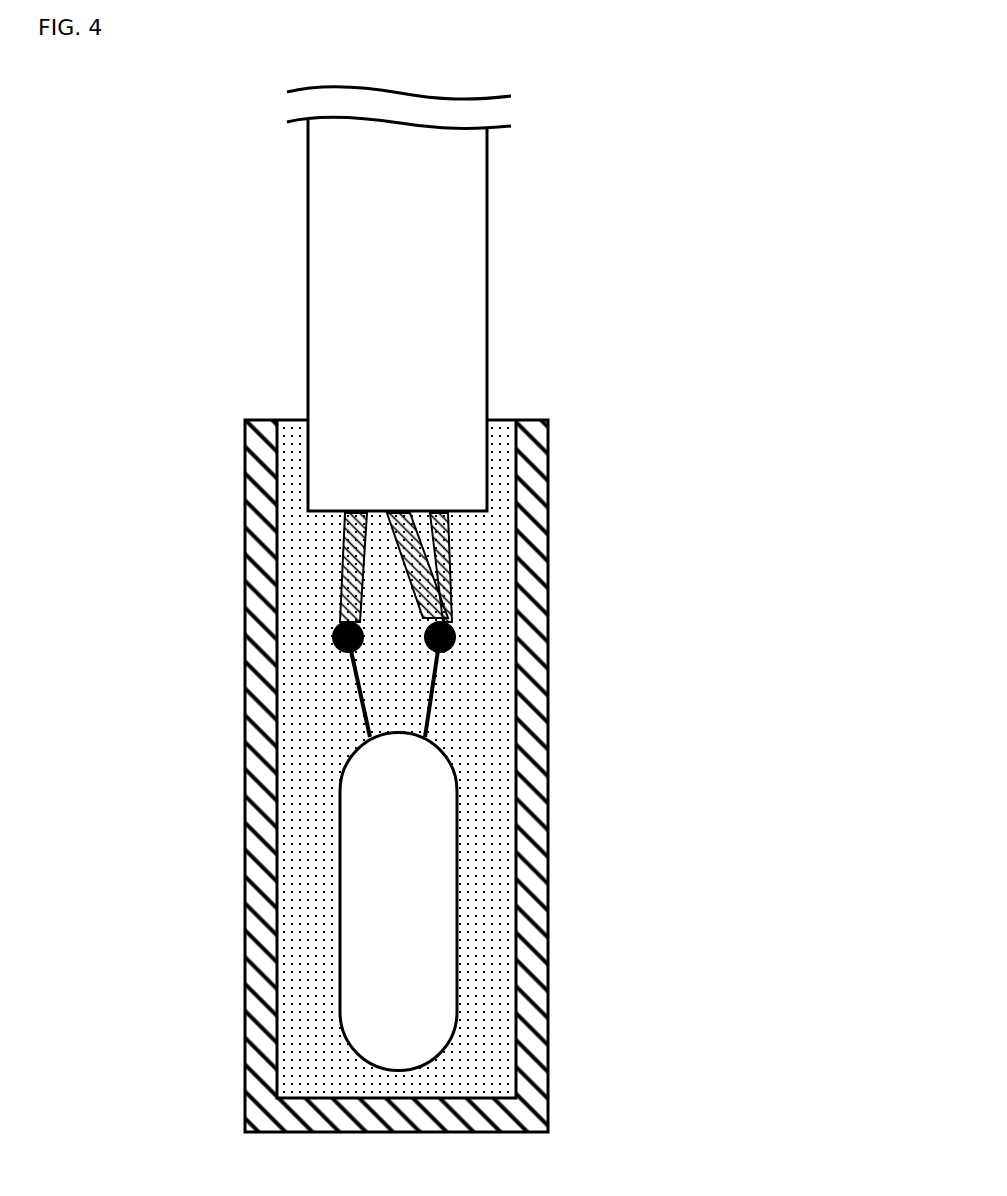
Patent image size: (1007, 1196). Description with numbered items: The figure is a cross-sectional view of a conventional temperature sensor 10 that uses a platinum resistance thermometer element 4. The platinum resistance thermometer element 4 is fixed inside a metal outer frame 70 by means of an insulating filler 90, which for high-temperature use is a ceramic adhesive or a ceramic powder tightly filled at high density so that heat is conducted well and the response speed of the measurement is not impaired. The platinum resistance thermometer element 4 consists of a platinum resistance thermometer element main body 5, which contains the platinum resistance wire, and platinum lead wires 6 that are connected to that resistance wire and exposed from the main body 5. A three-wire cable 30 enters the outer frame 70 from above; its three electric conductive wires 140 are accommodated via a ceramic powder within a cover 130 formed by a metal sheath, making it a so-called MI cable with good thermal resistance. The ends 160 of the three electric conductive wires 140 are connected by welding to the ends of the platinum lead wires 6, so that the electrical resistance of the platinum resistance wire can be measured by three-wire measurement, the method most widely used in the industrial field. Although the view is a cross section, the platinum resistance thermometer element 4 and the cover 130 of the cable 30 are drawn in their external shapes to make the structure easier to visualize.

The platinum resistance thermometer element 4 is at (660, 712).
The platinum resistance thermometer element main body 5 is at (427, 877).
The platinum lead wires 6 is at (437, 673).
The temperature sensor 10 is at (710, 513).
The three-wire cable 30 is at (607, 177).
The metal outer frame 70 is at (532, 930).
The insulating filler 90 is at (490, 1010).
The cover 130 is at (460, 322).
The electric conductive wires 140 is at (345, 541).
The ends of electric conductive wires 160 is at (333, 634).